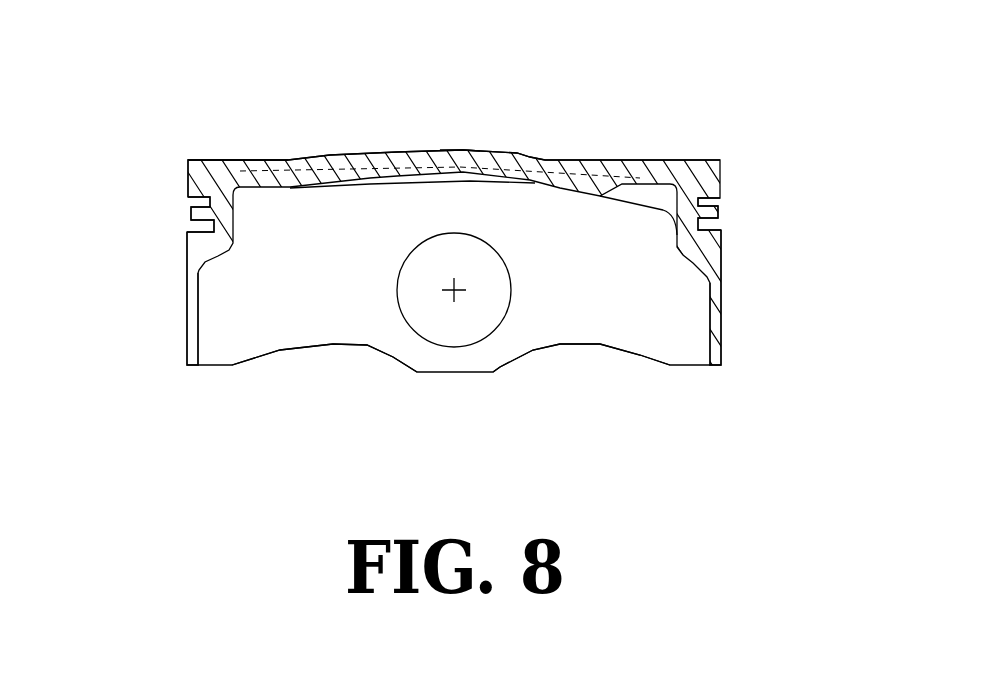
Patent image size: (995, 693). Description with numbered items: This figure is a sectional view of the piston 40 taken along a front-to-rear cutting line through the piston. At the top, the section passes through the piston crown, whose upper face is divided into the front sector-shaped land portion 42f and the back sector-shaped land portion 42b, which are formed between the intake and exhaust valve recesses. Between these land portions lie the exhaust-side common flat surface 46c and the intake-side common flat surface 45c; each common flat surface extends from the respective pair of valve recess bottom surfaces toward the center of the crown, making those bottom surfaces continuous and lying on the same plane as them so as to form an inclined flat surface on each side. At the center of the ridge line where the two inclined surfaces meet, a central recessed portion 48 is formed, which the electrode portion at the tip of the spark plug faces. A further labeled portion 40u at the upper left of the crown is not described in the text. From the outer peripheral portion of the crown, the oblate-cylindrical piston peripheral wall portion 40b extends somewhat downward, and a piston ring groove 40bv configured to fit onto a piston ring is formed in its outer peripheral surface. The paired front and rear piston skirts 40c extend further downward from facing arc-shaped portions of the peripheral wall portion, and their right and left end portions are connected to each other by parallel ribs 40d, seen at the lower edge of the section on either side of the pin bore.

The piston 40 is at (239, 144).
The sector-shaped land portion 42f is at (297, 158).
The sector-shaped land portion 42b is at (670, 158).
The exhaust-side common flat surface 46c is at (405, 150).
The intake-side common flat surface 45c is at (527, 156).
The central recessed portion 48 is at (463, 148).
The piston top surface 40u is at (187, 164).
The piston peripheral wall portion 40b is at (188, 209).
The piston ring groove 40bv is at (723, 200).
The piston skirt 40c is at (187, 327).
The rib 40d is at (320, 348).